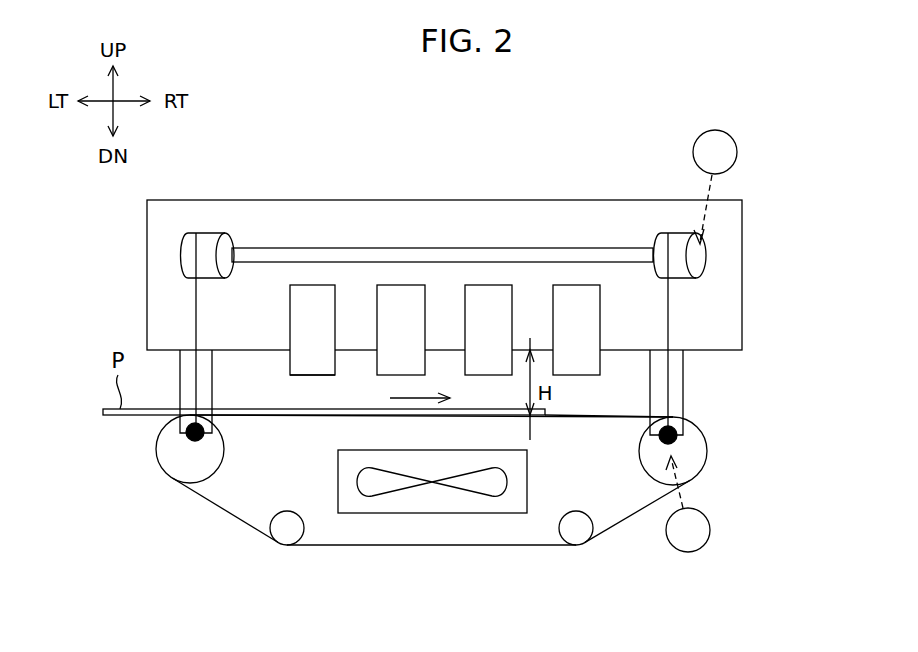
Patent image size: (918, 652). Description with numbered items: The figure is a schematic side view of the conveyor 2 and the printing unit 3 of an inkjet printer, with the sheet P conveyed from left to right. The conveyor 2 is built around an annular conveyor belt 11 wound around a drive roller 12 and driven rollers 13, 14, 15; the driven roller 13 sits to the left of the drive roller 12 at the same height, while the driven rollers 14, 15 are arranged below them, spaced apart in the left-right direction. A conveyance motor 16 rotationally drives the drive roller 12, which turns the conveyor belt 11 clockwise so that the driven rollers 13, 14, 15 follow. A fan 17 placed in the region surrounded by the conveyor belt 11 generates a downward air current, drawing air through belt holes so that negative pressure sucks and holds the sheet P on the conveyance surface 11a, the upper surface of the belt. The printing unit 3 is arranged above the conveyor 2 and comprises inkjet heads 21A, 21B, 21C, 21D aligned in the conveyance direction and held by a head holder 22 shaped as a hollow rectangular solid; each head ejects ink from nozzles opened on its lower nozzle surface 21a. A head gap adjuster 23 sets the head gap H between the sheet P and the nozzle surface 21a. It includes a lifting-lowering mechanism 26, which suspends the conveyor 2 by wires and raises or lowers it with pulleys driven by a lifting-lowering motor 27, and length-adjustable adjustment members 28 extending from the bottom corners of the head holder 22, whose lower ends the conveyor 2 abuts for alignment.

The conveyor 2 is at (190, 530).
The printing unit 3 is at (137, 235).
The conveyor belt 11 is at (625, 523).
The conveyance surface 11a is at (610, 416).
The drive roller 12 is at (705, 450).
The driven roller 13 is at (157, 452).
The driven roller 14 is at (290, 546).
The driven roller 15 is at (580, 546).
The conveyance motor 16 is at (710, 530).
The fan 17 is at (432, 514).
The inkjet head 21A is at (312, 285).
The inkjet head 21B is at (400, 285).
The inkjet head 21C is at (488, 285).
The inkjet head 21D is at (576, 285).
The nozzle surface 21a is at (313, 375).
The head holder 22 is at (742, 300).
The head gap adjuster 23 is at (718, 122).
The lifting-lowering mechanism 26 is at (701, 252).
The lifting-lowering motor 27 is at (737, 152).
The adjustment member 28 is at (212, 378).